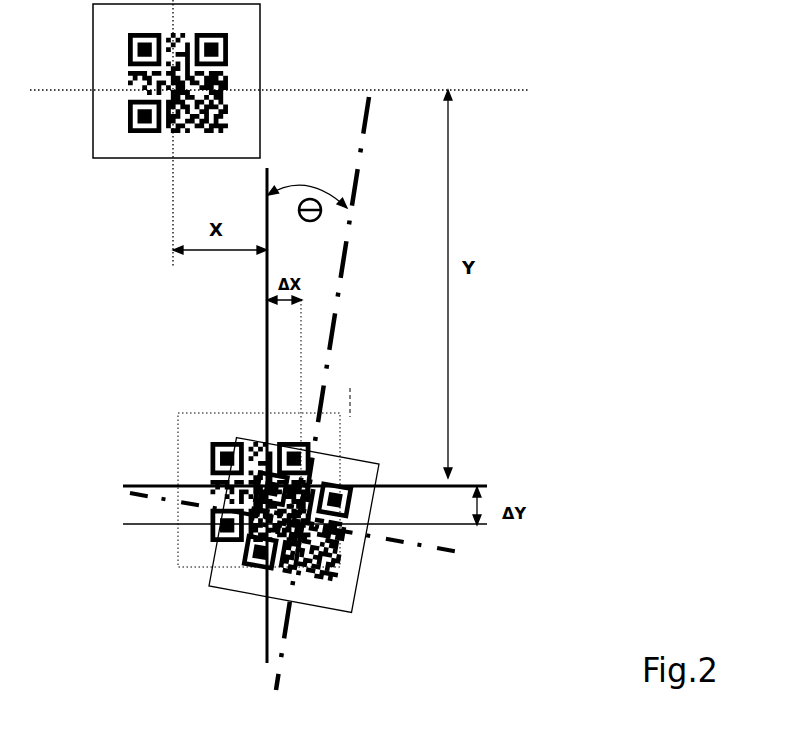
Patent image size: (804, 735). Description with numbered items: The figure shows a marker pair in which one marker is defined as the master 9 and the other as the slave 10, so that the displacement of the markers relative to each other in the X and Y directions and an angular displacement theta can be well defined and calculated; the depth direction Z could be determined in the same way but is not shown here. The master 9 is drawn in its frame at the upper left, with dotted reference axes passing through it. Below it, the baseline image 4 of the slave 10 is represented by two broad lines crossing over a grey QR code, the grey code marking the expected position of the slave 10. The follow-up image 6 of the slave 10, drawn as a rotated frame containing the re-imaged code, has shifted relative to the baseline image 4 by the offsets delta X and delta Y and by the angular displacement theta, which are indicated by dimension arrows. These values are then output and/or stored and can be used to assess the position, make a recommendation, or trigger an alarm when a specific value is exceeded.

The master 9 is at (153, 81).
The slave 10 is at (255, 490).
The baseline image 4 is at (285, 407).
The follow-up image 6 is at (365, 462).